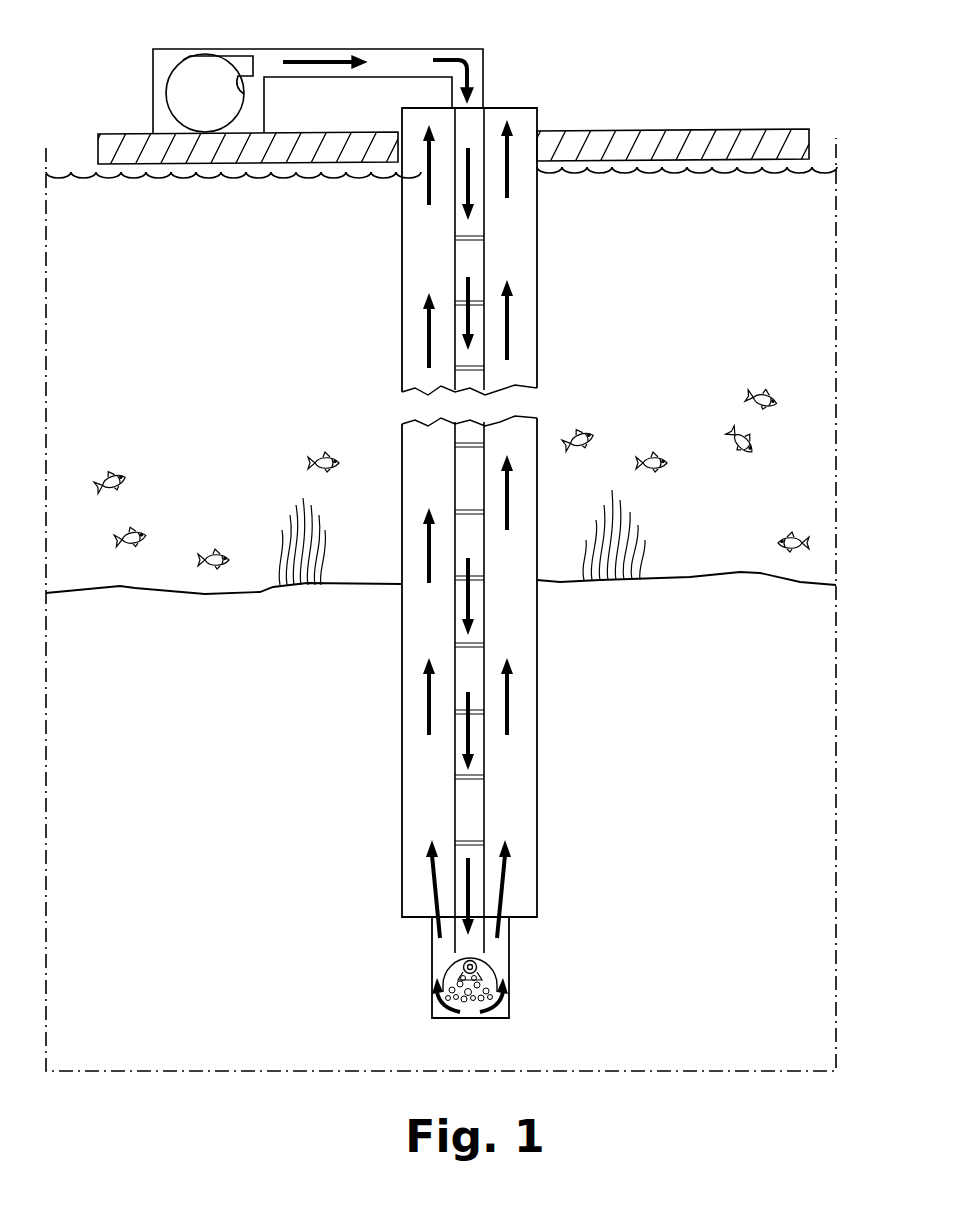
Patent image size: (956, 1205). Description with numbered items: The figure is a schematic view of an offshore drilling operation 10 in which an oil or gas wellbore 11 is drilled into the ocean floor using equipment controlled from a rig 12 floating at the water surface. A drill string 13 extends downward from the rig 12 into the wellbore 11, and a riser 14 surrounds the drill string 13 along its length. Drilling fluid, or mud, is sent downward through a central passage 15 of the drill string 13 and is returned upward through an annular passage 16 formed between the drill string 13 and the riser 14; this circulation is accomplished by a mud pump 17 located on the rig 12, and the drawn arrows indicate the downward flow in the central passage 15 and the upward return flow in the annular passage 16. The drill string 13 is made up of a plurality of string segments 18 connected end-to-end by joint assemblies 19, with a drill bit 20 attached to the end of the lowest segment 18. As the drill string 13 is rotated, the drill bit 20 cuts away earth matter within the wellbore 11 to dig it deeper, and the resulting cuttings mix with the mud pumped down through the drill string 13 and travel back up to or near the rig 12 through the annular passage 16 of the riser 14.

The drilling operation 10 is at (806, 100).
The wellbore 11 is at (500, 1010).
The rig 12 is at (701, 119).
The drill string 13 is at (495, 225).
The riser 14 is at (545, 345).
The central passage 15 is at (476, 545).
The annular passage 16 is at (503, 446).
The mud pump 17 is at (193, 105).
The string segments 18 is at (472, 252).
The joint assemblies 19 is at (462, 298).
The drill bit 20 is at (452, 975).